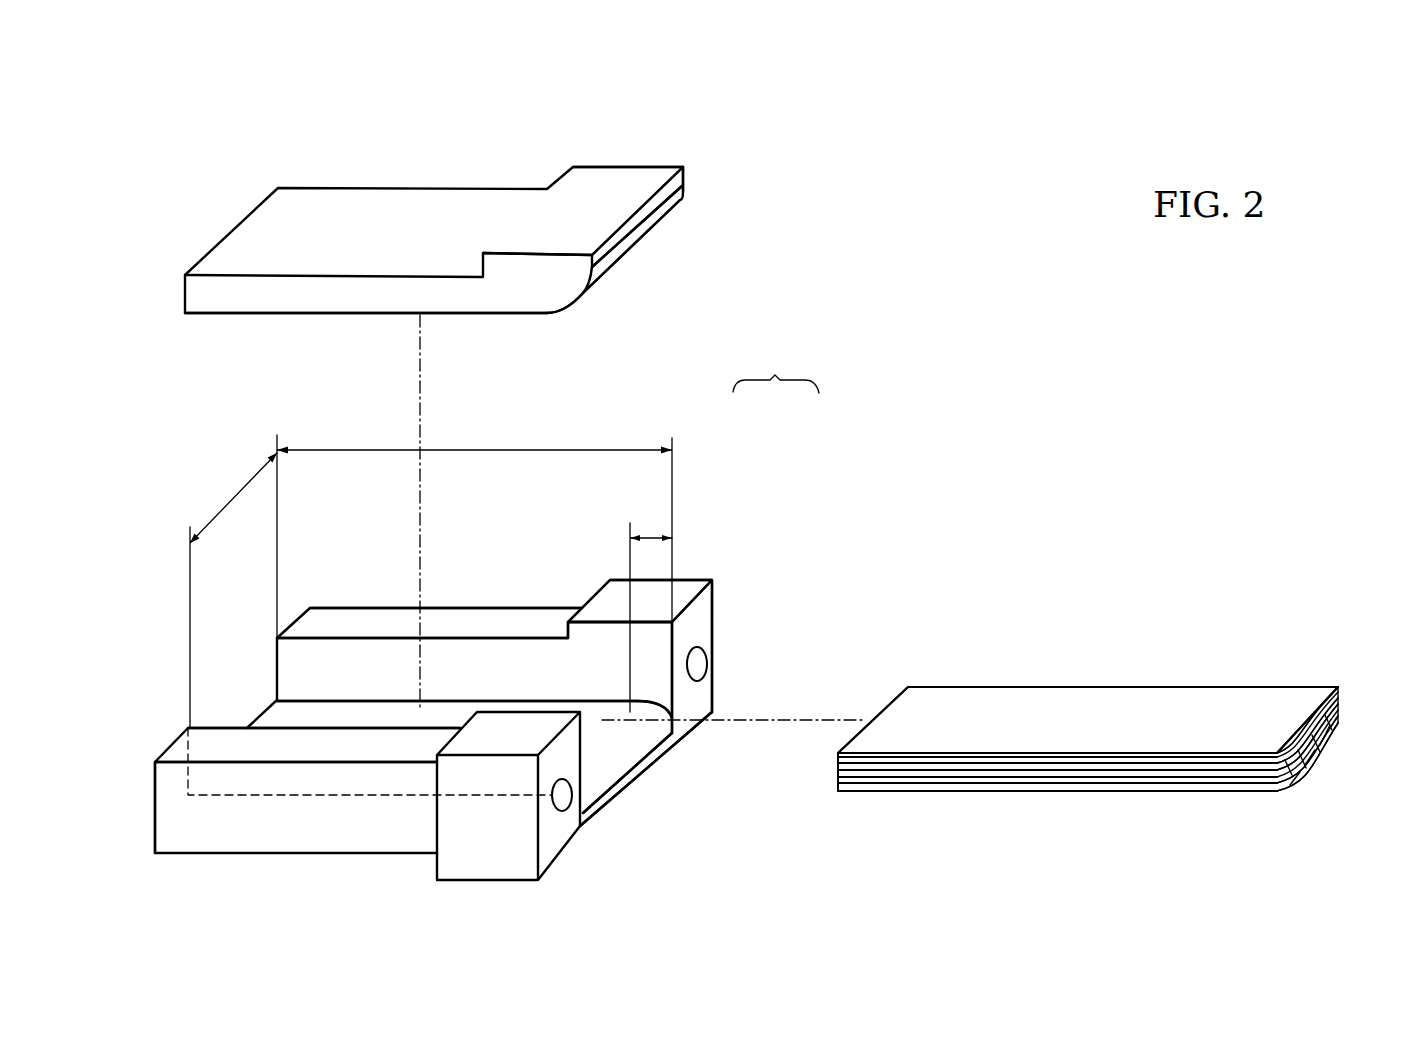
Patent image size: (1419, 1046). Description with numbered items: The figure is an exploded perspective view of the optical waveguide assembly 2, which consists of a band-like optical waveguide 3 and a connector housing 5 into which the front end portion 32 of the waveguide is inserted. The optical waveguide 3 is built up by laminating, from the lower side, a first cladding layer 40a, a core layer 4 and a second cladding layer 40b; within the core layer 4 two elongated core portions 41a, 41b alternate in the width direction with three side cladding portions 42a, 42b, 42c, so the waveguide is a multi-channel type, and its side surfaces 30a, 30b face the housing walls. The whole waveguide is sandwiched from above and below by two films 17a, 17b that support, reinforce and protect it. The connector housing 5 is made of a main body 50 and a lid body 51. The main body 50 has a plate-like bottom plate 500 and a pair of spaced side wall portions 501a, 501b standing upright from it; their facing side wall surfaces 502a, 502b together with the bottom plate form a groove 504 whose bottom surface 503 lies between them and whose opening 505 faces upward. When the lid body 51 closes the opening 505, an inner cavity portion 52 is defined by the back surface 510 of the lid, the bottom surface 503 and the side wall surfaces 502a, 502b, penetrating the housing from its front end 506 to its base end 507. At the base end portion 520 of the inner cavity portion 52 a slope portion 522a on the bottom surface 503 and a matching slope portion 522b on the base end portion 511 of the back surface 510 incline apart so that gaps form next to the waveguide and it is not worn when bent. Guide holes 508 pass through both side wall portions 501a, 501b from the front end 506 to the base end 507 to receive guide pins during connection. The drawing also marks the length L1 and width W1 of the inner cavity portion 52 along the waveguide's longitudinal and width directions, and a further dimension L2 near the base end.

The optical waveguide assembly 2 is at (776, 371).
The optical waveguide 3 is at (957, 630).
The core layer 4 is at (907, 777).
The connector housing 5 is at (690, 463).
The film 17a is at (1063, 760).
The film 17b is at (1137, 793).
The side surface of optical waveguide 30a is at (1072, 776).
The side surface of optical waveguide 30b is at (1175, 687).
The front end portion 32 is at (930, 708).
The first cladding layer 40a is at (983, 783).
The second cladding layer 40b is at (1003, 763).
The core portion 41a is at (1310, 783).
The core portion 41b is at (1333, 727).
The side cladding portion 42a is at (1290, 793).
The side cladding portion 42b is at (1318, 752).
The side cladding portion 42c is at (1335, 712).
The main body 50 is at (377, 855).
The lid body 51 is at (335, 187).
The inner cavity portion 52 is at (410, 715).
The bottom plate 500 is at (373, 715).
The side wall portion 501a is at (265, 748).
The side wall portion 501b is at (305, 625).
The side wall surface 502a is at (343, 737).
The side wall surface 502b is at (345, 665).
The bottom surface of groove 503 is at (593, 730).
The groove 504 is at (452, 708).
The opening 505 is at (505, 673).
The front end 506 is at (153, 813).
The base end 507 is at (717, 601).
The guide hole 508 is at (700, 663).
The back surface 510 is at (338, 257).
The base end portion of lid body 511 is at (624, 183).
The base end portion of inner cavity portion 520 is at (605, 733).
The slope portion 522a is at (633, 752).
The slope portion 522b is at (580, 300).
The length of inner cavity portion L1 is at (474, 528).
The length L2 is at (651, 608).
The width of inner cavity portion W1 is at (233, 590).